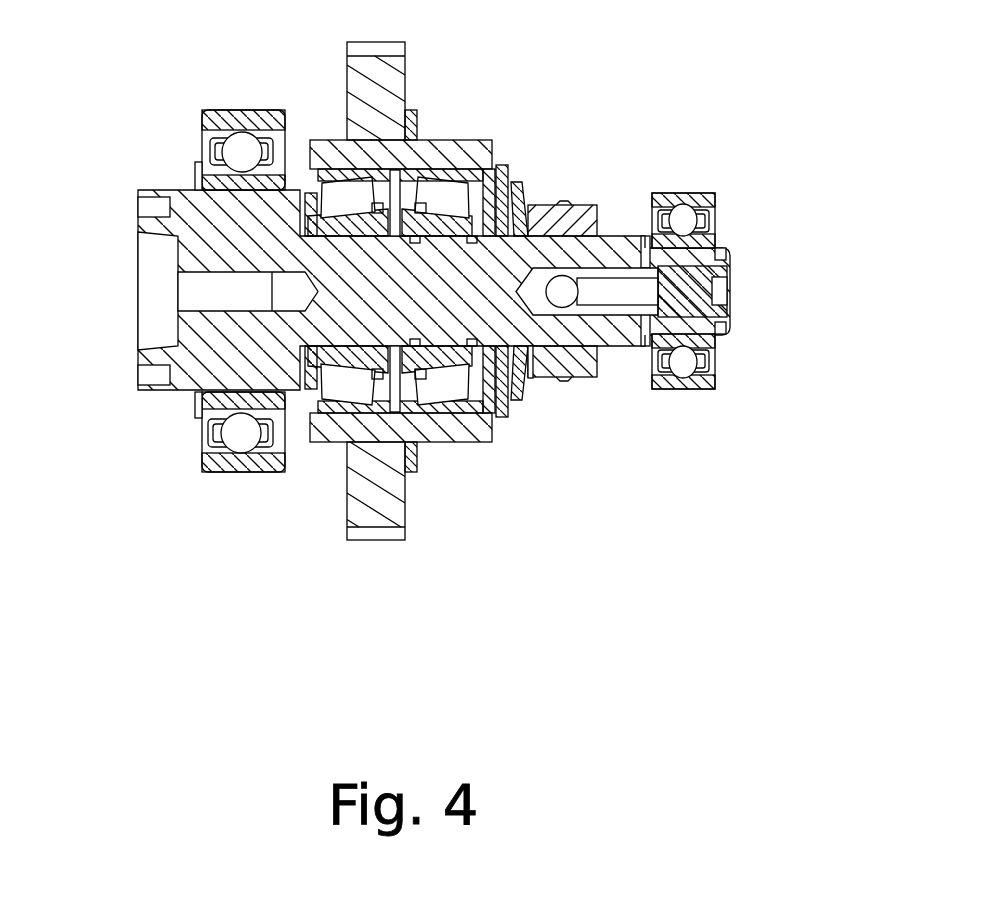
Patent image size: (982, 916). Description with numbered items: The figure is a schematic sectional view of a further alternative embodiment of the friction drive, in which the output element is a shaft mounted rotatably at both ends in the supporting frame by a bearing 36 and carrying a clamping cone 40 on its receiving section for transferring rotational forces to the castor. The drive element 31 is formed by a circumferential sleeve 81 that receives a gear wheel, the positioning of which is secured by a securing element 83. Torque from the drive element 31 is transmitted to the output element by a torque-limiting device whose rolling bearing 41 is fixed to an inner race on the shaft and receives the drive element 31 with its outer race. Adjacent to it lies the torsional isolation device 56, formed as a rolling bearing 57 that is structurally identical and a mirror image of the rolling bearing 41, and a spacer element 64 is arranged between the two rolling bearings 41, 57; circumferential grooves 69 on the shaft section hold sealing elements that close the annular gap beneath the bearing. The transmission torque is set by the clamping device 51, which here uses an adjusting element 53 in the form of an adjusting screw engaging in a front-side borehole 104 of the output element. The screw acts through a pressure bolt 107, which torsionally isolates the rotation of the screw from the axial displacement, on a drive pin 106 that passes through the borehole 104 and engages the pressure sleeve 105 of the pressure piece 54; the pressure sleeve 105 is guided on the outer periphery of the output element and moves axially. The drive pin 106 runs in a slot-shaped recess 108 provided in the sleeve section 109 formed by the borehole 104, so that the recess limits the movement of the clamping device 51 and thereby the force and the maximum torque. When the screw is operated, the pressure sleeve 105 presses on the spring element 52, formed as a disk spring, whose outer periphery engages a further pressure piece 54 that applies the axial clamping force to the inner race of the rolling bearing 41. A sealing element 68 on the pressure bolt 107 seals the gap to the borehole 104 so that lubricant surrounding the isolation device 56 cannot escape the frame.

The drive element 31 is at (345, 511).
The bearing 36 is at (194, 145).
The clamping cone 40 is at (138, 345).
The rolling bearing 41 is at (338, 162).
The clamping device 51 is at (555, 397).
The spring element 52 is at (516, 185).
The adjusting element 53 is at (687, 282).
The pressure piece 54 is at (503, 158).
The torsional isolation device 56 is at (422, 110).
The rolling bearing 57 is at (443, 164).
The spacer element 64 is at (343, 445).
The sealing element 68 is at (616, 306).
The circumferential grooves 69 is at (433, 352).
The sleeve 81 is at (481, 443).
The securing element 83 is at (407, 477).
The borehole 104 is at (583, 370).
The pressure sleeve 105 is at (586, 206).
The drive pin 106 is at (567, 288).
The pressure bolt 107 is at (730, 332).
The slot-shaped recess 108 is at (535, 352).
The sleeve section 109 is at (652, 198).